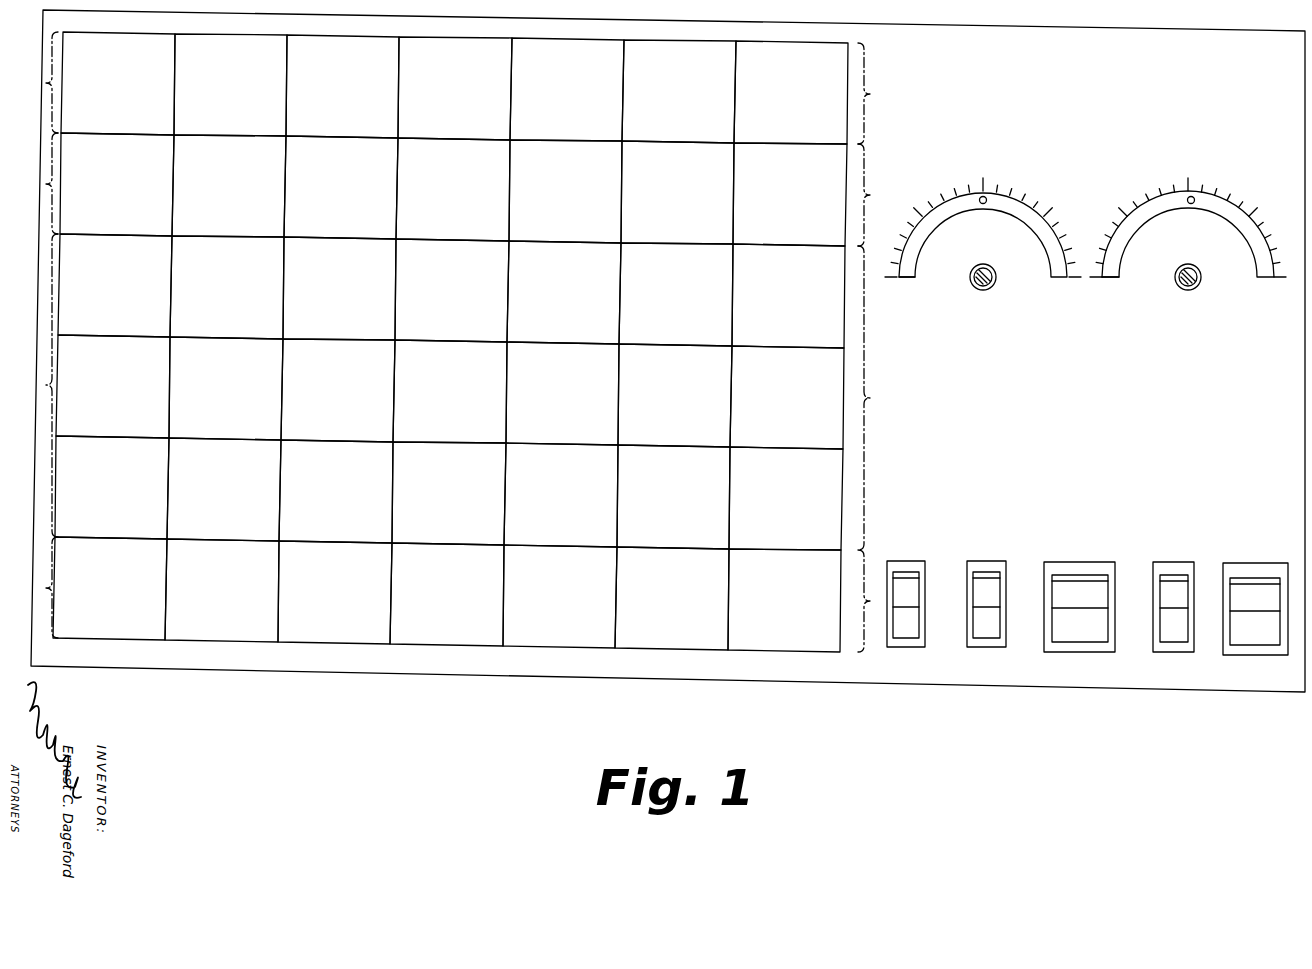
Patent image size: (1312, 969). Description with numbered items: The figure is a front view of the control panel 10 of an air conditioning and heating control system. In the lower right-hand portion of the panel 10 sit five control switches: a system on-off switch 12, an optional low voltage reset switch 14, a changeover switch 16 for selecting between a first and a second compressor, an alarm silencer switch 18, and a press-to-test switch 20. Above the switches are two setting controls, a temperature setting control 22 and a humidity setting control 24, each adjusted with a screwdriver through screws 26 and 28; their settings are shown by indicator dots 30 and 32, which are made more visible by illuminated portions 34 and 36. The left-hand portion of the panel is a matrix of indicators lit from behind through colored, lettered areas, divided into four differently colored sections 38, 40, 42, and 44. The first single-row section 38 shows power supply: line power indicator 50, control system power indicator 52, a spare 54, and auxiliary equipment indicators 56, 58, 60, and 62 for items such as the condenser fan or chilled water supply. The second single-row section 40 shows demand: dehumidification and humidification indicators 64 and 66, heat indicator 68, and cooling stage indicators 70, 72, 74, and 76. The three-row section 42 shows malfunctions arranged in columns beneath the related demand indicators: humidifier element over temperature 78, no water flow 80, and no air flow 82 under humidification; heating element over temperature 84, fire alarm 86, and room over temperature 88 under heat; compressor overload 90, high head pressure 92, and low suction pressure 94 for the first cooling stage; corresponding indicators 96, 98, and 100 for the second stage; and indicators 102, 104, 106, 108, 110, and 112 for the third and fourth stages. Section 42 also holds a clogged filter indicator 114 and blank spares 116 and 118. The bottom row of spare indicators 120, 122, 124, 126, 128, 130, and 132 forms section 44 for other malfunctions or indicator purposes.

The control panel 10 is at (668, 351).
The system on-off control switch 12 is at (912, 627).
The low voltage reset control switch 14 is at (990, 627).
The changeover control switch 16 is at (1095, 628).
The alarm silencer control switch 18 is at (1180, 628).
The press-to-test control switch 20 is at (1266, 635).
The temperature setting control 22 is at (1008, 206).
The humidity setting control 24 is at (1226, 210).
The screw 26 is at (990, 267).
The screw 28 is at (1195, 267).
The indicator dot 30 is at (980, 203).
The indicator dot 32 is at (1188, 203).
The illuminated portion 34 is at (902, 280).
The illuminated portion 36 is at (1116, 279).
The first indicator section 38 is at (54, 99).
The second indicator section 40 is at (53, 193).
The third indicator section 42 is at (52, 383).
The fourth indicator section 44 is at (50, 605).
The line power indicator 50 is at (108, 126).
The control system power indicator 52 is at (220, 128).
The spare indicator 54 is at (333, 130).
The auxiliary equipment power indicator 56 is at (445, 131).
The auxiliary equipment power indicator 58 is at (557, 133).
The auxiliary equipment power indicator 60 is at (669, 134).
The auxiliary equipment power indicator 62 is at (781, 136).
The dehumidification indicator 64 is at (107, 229).
The humidification indicator 66 is at (219, 231).
The heat indicator 68 is at (331, 233).
The first stage cooling indicator 70 is at (443, 234).
The second stage cooling indicator 72 is at (555, 236).
The third stage cooling indicator 74 is at (668, 238).
The fourth stage cooling indicator 76 is at (780, 239).
The humidifier element over temperature indicator 78 is at (217, 332).
The no water flow indicator 80 is at (216, 434).
The no air flow indicator 82 is at (214, 533).
The heating element over temperature indicator 84 is at (329, 334).
The fire alarm indicator 86 is at (328, 436).
The room over temperature indicator 88 is at (326, 535).
The compressor overload indicator 90 is at (442, 336).
The high head pressure indicator 92 is at (440, 438).
The low suction pressure indicator 94 is at (439, 537).
The compressor overload indicator 96 is at (554, 337).
The high head pressure indicator 98 is at (553, 440).
The low suction pressure indicator 100 is at (546, 539).
The compressor overload indicator 102 is at (661, 339).
The high head pressure indicator 104 is at (660, 442).
The low suction pressure indicator 106 is at (658, 541).
The compressor overload indicator 108 is at (774, 341).
The high head pressure indicator 110 is at (772, 443).
The low suction pressure indicator 112 is at (771, 543).
The clogged filter indicator 114 is at (97, 531).
The spare indicator 116 is at (100, 330).
The spare indicator 118 is at (98, 432).
The spare indicator 120 is at (95, 633).
The spare indicator 122 is at (207, 635).
The spare indicator 124 is at (320, 637).
The spare indicator 126 is at (432, 639).
The spare indicator 128 is at (545, 641).
The spare indicator 130 is at (657, 643).
The spare indicator 132 is at (769, 645).